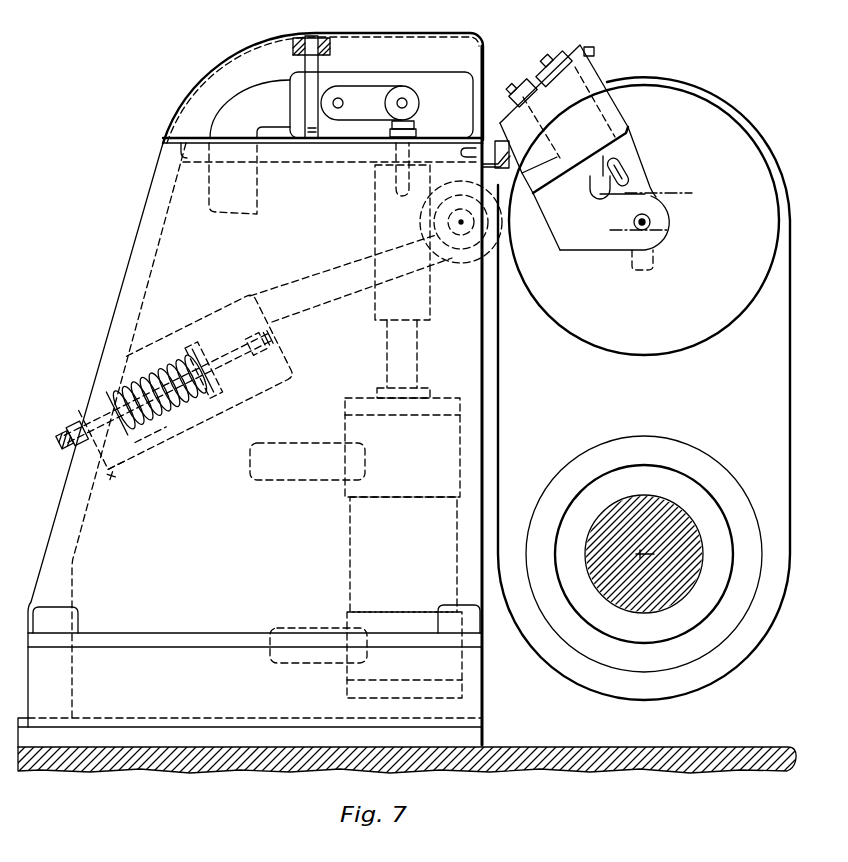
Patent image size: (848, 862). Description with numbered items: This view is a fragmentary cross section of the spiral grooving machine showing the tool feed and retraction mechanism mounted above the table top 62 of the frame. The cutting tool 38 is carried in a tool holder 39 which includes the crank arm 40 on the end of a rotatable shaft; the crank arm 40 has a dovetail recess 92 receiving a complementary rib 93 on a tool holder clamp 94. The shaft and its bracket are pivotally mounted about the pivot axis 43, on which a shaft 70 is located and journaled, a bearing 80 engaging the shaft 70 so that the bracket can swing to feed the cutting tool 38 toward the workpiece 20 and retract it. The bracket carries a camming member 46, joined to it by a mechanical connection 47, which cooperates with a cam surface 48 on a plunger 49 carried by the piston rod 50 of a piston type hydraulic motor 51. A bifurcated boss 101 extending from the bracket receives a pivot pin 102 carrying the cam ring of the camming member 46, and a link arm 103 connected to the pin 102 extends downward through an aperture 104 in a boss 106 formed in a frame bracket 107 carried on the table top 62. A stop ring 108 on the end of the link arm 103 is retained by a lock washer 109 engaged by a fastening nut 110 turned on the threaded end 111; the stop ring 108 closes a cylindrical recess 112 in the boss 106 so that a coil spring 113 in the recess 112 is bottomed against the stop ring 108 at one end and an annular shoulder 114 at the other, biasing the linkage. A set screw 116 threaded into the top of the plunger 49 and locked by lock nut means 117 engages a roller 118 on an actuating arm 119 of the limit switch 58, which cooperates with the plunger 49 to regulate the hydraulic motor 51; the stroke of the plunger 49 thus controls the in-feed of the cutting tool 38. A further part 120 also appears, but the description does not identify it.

The workpiece 20 is at (678, 221).
The cutting tool 38 is at (636, 193).
The tool holder 39 is at (576, 339).
The crank arm 40 is at (569, 252).
The pivot axis 43 is at (655, 554).
The camming member 46 is at (452, 268).
The mechanical connection 47 is at (500, 238).
The cam surface 48 is at (432, 194).
The plunger 49 is at (387, 338).
The piston rod 50 is at (418, 366).
The piston type hydraulic motor 51 is at (351, 557).
The limit switch 58 is at (466, 72).
The table top 62 is at (528, 746).
The shaft 70 is at (684, 596).
The bearing 80 is at (640, 646).
The dovetail recess 92 is at (521, 168).
The rib 93 is at (618, 118).
The tool holder clamp 94 is at (636, 172).
The bifurcated boss 101 is at (459, 150).
The pivot pin 102 is at (466, 222).
The link arm 103 is at (357, 303).
The aperture 104 is at (265, 333).
The boss 106 is at (190, 324).
The frame bracket 107 is at (107, 342).
The stop ring 108 is at (151, 433).
The lock washer 109 is at (110, 477).
The fastening nut 110 is at (76, 426).
The threaded end 111 is at (72, 453).
The cylindrical recess 112 is at (205, 401).
The coil spring 113 is at (187, 364).
The annular shoulder 114 is at (257, 335).
The set screw 116 is at (414, 122).
The lock nut means 117 is at (390, 128).
The roller 118 is at (411, 93).
The actuating arm 119 is at (371, 98).
The bracket 120 is at (214, 136).